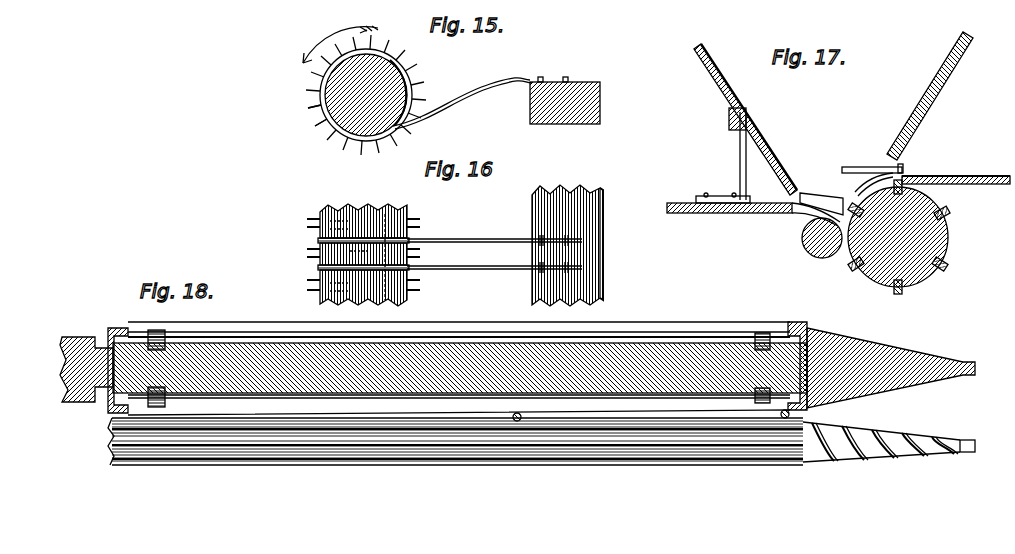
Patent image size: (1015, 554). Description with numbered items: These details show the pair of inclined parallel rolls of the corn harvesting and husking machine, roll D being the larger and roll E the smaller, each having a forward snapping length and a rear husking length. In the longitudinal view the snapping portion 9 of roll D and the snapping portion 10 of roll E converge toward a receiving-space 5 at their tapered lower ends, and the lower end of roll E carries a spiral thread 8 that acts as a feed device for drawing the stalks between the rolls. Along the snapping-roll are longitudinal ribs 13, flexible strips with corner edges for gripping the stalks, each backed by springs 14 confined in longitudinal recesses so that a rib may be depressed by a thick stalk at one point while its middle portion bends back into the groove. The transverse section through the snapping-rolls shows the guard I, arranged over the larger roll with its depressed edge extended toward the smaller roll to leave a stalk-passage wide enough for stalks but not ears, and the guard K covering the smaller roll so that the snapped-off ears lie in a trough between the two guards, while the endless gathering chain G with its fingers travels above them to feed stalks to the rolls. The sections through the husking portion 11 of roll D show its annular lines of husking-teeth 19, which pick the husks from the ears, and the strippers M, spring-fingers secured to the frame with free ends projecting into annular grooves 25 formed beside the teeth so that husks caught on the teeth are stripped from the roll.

In FIG. 18, the receiving-space 5 is at (925, 398).
In FIG. 18, the spiral thread 8 is at (905, 455).
In FIG. 17, the snapping portion of roll D 9 is at (872, 297).
In FIG. 18, the snapping portion of roll D 9 is at (455, 348).
In FIG. 17, the snapping portion of roll E 10 is at (818, 252).
In FIG. 18, the snapping portion of roll E 10 is at (462, 462).
In FIG. 15, the husking portion of roll D 11 is at (414, 92).
In FIG. 16, the husking portion of roll D 11 is at (388, 212).
In FIG. 18, the husking portion of roll D 11 is at (62, 343).
In FIG. 17, the rib 13 is at (908, 191).
In FIG. 18, the rib 13 is at (283, 328).
In FIG. 18, the springs 14 is at (157, 330).
In FIG. 15, the husking-teeth 19 is at (326, 120).
In FIG. 16, the husking-teeth 19 is at (420, 290).
In FIG. 15, the annular grooves 25 is at (357, 43).
In FIG. 16, the annular grooves 25 is at (318, 240).
In FIG. 15, the roll D is at (345, 95).
In FIG. 16, the roll D is at (357, 243).
In FIG. 17, the roll D is at (911, 237).
In FIG. 18, the roll D is at (88, 310).
In FIG. 17, the roll E is at (807, 240).
In FIG. 18, the roll E is at (106, 440).
In FIG. 15, the strippers M is at (484, 94).
In FIG. 16, the strippers M is at (448, 240).
In FIG. 17, the guard I is at (870, 180).
In FIG. 17, the endless gathering chain G is at (902, 168).
In FIG. 17, the guard K is at (808, 212).